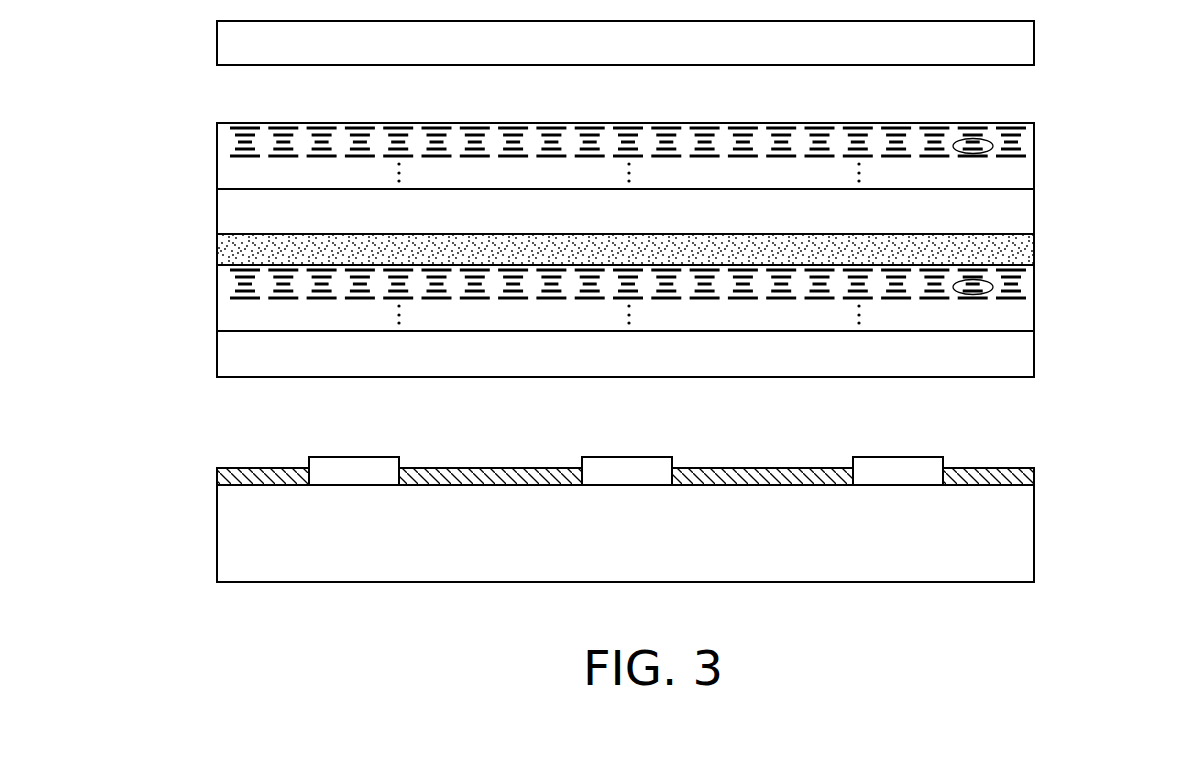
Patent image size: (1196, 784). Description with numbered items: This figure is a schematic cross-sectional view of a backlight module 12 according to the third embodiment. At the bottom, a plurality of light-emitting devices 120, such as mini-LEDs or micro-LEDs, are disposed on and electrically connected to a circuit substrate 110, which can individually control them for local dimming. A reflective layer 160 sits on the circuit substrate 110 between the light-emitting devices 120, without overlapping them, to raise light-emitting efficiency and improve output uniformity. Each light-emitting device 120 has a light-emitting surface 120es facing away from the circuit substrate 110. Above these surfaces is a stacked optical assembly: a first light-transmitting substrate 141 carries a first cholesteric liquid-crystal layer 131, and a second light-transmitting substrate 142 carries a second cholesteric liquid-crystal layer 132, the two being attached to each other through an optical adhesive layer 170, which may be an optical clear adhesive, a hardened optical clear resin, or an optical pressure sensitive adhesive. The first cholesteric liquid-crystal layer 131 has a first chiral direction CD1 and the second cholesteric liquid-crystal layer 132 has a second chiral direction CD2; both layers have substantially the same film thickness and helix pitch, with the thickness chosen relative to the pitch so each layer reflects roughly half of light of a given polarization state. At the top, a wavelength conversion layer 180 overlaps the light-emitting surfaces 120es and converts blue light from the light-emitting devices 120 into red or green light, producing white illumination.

The backlight module 12 is at (668, 318).
The circuit substrate 110 is at (1020, 555).
The light-emitting devices 120 is at (900, 463).
The light-emitting surface 120es is at (336, 454).
The reflective layer 160 is at (1023, 473).
The first light-transmitting substrate 141 is at (1012, 359).
The first cholesteric liquid-crystal layer 131 is at (1012, 313).
The first chiral direction CD1 is at (992, 285).
The optical adhesive layer 170 is at (1018, 257).
The second light-transmitting substrate 142 is at (1018, 215).
The second cholesteric liquid-crystal layer 132 is at (1018, 172).
The second chiral direction CD2 is at (985, 142).
The wavelength conversion layer 180 is at (1025, 43).